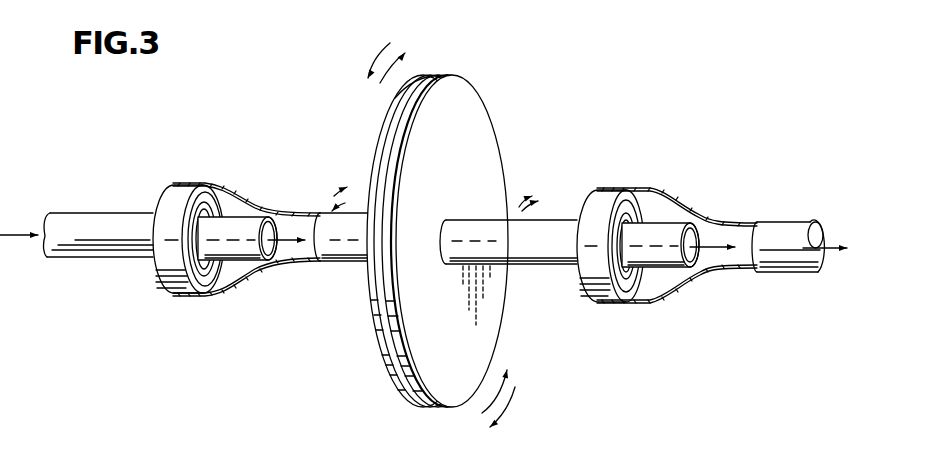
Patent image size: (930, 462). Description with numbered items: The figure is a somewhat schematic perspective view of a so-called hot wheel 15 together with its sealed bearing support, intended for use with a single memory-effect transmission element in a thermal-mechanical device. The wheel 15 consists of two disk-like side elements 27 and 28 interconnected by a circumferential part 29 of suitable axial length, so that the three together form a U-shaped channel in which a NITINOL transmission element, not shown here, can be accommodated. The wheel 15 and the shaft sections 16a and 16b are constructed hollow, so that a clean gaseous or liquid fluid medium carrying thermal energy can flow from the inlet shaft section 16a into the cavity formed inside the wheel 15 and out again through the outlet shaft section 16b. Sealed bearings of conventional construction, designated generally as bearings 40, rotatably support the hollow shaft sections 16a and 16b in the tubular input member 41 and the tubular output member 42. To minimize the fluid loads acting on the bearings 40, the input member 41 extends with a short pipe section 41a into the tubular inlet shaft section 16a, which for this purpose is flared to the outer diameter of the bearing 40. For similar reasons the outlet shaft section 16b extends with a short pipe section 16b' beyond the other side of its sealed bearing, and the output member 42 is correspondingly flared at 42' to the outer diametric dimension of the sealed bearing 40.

The hot wheel 15 is at (515, 170).
The inlet shaft section 16a is at (295, 268).
The outlet shaft section 16b is at (508, 272).
The short pipe section 16b' is at (678, 280).
The disk-like side element 27 is at (381, 138).
The disk-like side element 28 is at (478, 125).
The circumferential part 29 is at (423, 76).
The sealed bearing 40 is at (203, 174).
The input member 41 is at (72, 213).
The short pipe section 41a is at (243, 261).
The output member 42 is at (788, 223).
The flared portion of output member 42' is at (677, 228).